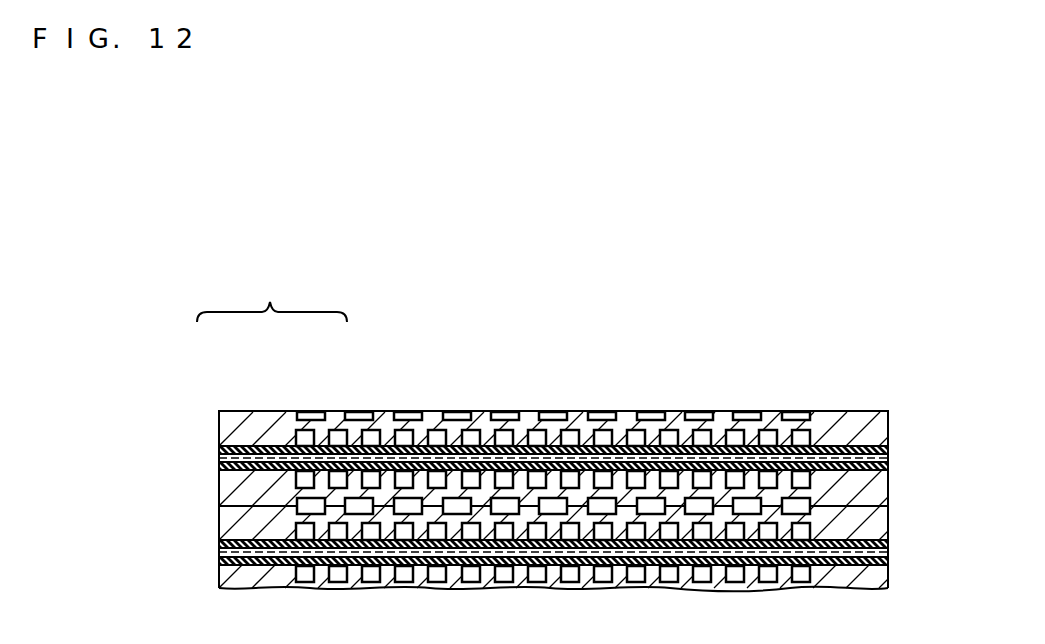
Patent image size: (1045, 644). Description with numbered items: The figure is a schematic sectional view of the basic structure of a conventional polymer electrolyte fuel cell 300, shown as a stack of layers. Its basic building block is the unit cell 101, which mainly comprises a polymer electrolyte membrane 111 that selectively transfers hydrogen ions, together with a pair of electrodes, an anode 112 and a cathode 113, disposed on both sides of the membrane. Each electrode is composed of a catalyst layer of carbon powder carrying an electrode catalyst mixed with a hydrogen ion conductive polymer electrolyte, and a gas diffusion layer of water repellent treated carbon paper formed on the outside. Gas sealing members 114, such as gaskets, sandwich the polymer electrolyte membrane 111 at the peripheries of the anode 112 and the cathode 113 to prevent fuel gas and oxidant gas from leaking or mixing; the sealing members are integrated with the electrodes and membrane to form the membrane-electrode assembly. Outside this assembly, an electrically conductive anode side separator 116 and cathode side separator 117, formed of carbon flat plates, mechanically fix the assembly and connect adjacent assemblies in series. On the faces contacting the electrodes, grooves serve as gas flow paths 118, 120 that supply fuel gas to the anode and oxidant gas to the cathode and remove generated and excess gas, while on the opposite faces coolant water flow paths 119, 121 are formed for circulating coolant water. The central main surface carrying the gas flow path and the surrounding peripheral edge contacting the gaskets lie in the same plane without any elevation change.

The unit cell 101 is at (565, 392).
The polymer electrolyte membrane 111 is at (262, 458).
The anode 112 is at (395, 425).
The cathode 113 is at (438, 417).
The gas sealing member 114 is at (252, 450).
The anode side separator 116 is at (226, 485).
The cathode side separator 117 is at (284, 440).
The gas flow path 118 is at (508, 430).
The coolant water flow path 119 is at (540, 497).
The gas flow path 120 is at (600, 437).
The coolant water flow path 121 is at (657, 417).
The polymer electrolyte fuel cell 300 is at (800, 334).